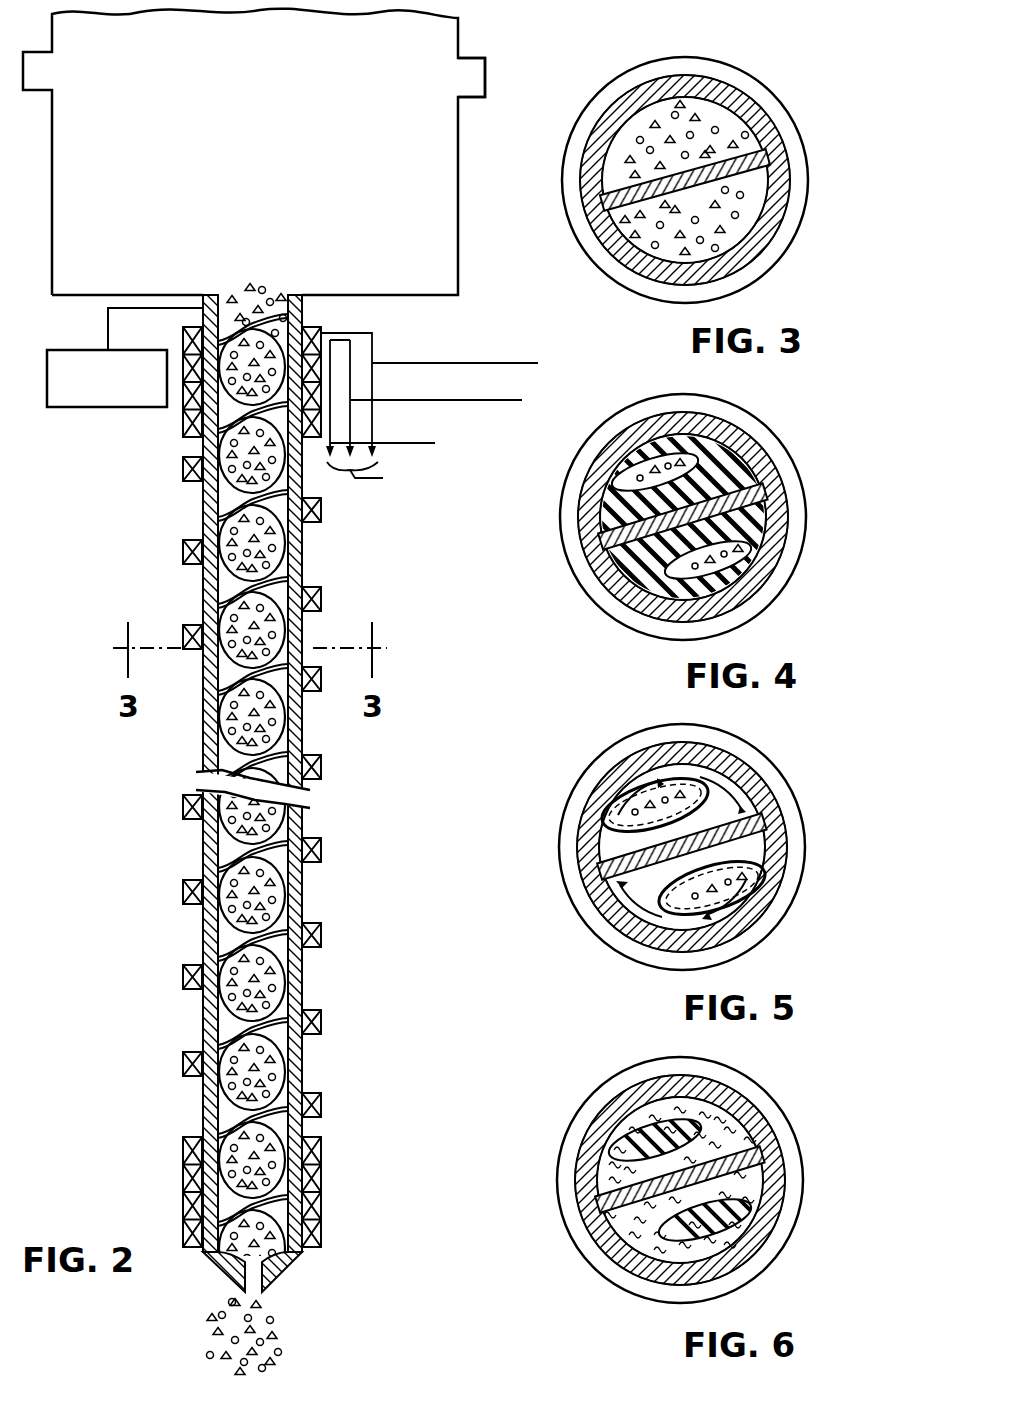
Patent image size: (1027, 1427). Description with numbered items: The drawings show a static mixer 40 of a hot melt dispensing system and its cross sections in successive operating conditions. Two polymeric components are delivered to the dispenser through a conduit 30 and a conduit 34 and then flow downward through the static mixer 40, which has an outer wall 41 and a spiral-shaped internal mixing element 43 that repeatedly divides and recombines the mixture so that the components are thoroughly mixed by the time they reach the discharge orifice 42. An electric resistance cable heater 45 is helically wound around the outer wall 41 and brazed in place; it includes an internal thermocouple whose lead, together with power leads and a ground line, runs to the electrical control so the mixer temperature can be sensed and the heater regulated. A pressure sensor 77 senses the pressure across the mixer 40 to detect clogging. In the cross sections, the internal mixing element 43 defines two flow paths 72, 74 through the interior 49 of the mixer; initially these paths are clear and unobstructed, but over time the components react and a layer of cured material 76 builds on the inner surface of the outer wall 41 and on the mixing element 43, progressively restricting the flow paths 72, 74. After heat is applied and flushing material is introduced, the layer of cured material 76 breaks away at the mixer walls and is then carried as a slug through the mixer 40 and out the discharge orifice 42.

In FIG. 2, the conduit 30 is at (38, 70).
In FIG. 2, the conduit 34 is at (463, 77).
In FIG. 2, the static mixer 40 is at (360, 545).
In FIG. 3, the static mixer 40 is at (810, 42).
In FIG. 4, the static mixer 40 is at (798, 430).
In FIG. 5, the static mixer 40 is at (830, 752).
In FIG. 6, the static mixer 40 is at (825, 1068).
In FIG. 2, the outer wall 41 is at (303, 568).
In FIG. 3, the outer wall 41 is at (651, 264).
In FIG. 4, the outer wall 41 is at (651, 600).
In FIG. 5, the outer wall 41 is at (632, 925).
In FIG. 6, the outer wall 41 is at (612, 1252).
In FIG. 2, the discharge orifice 42 is at (258, 1290).
In FIG. 2, the internal mixing element 43 is at (208, 572).
In FIG. 3, the internal mixing element 43 is at (612, 204).
In FIG. 4, the internal mixing element 43 is at (612, 540).
In FIG. 5, the internal mixing element 43 is at (610, 870).
In FIG. 6, the internal mixing element 43 is at (610, 1200).
In FIG. 2, the electric resistance cable heater 45 is at (321, 497).
In FIG. 3, the electric resistance cable heater 45 is at (614, 284).
In FIG. 4, the electric resistance cable heater 45 is at (611, 620).
In FIG. 5, the electric resistance cable heater 45 is at (601, 935).
In FIG. 6, the electric resistance cable heater 45 is at (560, 1188).
In FIG. 2, the interior 49 is at (284, 322).
In FIG. 3, the flow path 72 is at (707, 116).
In FIG. 4, the flow path 72 is at (660, 470).
In FIG. 5, the flow path 72 is at (694, 775).
In FIG. 3, the flow path 74 is at (727, 238).
In FIG. 4, the flow path 74 is at (742, 590).
In FIG. 5, the flow path 74 is at (752, 878).
In FIG. 6, the flow path 74 is at (679, 1179).
In FIG. 4, the layer of cured material 76 is at (745, 478).
In FIG. 5, the layer of cured material 76 is at (608, 850).
In FIG. 6, the layer of cured material 76 is at (727, 1102).
In FIG. 2, the pressure sensor 77 is at (107, 408).